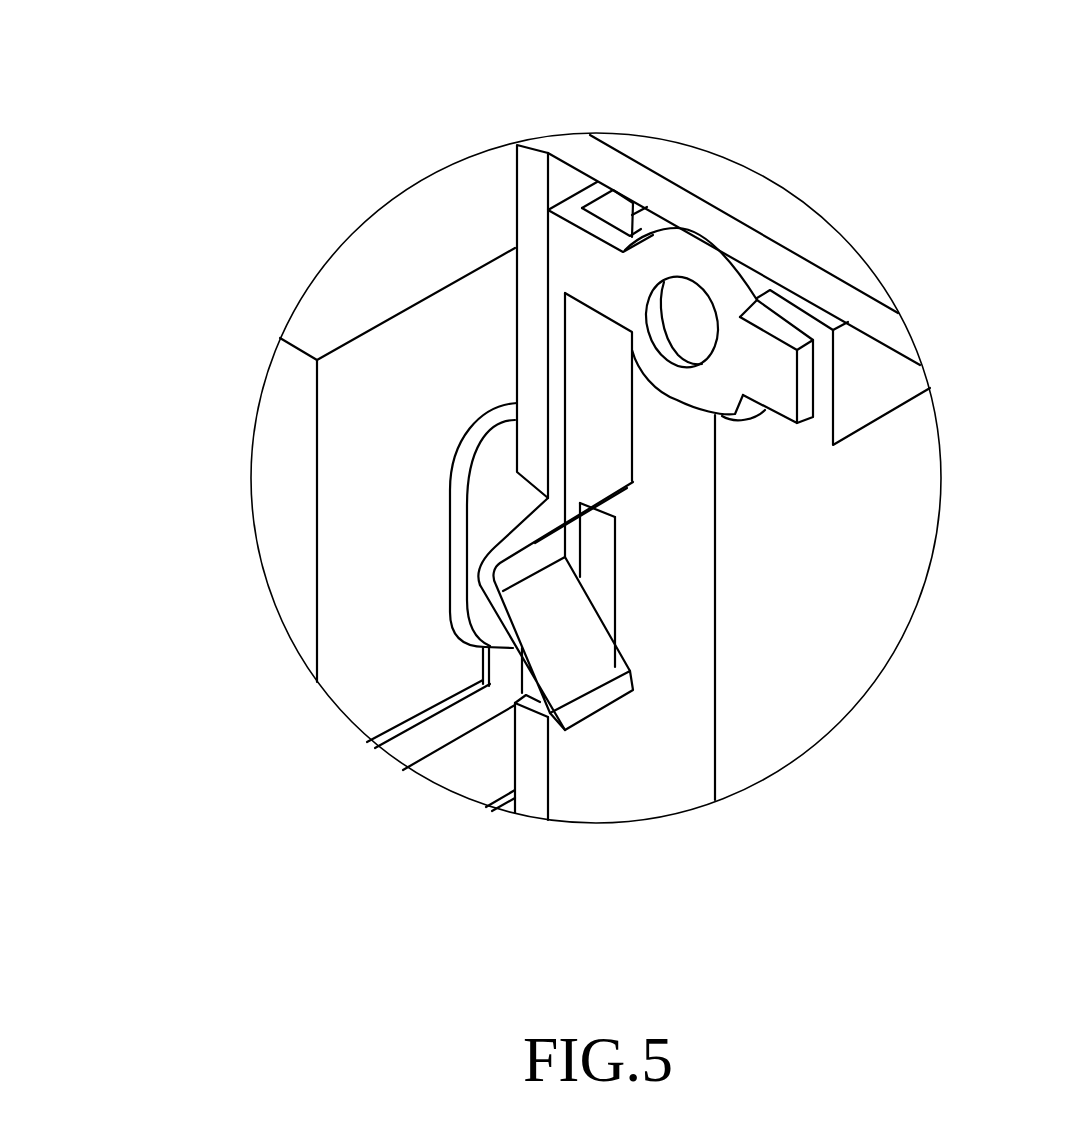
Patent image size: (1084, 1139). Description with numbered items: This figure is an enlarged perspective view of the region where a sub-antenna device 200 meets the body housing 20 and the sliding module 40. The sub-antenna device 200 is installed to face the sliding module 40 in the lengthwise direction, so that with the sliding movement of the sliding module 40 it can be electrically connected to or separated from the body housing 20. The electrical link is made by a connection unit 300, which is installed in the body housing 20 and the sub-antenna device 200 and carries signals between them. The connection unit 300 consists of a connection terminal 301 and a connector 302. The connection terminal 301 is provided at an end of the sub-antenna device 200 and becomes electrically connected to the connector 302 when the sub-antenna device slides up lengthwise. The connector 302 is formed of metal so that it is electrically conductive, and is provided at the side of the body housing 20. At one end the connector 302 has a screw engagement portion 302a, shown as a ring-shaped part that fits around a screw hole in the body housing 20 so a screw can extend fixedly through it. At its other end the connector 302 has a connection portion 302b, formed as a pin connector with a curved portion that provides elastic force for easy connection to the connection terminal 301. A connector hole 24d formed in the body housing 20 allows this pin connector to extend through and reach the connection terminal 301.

The body housing 20 is at (813, 236).
The sliding module 40 is at (340, 303).
The connection unit 300 is at (121, 397).
The connector 302 is at (547, 393).
The screw engagement portion 302a is at (687, 274).
The connection portion 302b is at (603, 663).
The connection terminal 301 is at (462, 468).
The connector hole 24d is at (520, 498).
The sub-antenna device 200 is at (400, 720).